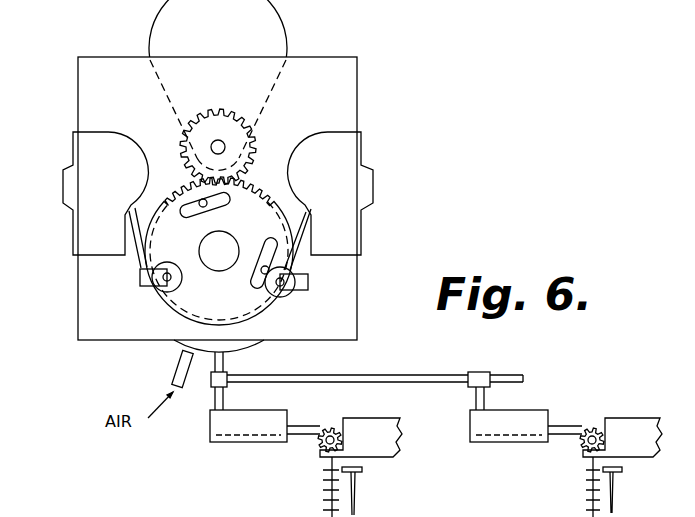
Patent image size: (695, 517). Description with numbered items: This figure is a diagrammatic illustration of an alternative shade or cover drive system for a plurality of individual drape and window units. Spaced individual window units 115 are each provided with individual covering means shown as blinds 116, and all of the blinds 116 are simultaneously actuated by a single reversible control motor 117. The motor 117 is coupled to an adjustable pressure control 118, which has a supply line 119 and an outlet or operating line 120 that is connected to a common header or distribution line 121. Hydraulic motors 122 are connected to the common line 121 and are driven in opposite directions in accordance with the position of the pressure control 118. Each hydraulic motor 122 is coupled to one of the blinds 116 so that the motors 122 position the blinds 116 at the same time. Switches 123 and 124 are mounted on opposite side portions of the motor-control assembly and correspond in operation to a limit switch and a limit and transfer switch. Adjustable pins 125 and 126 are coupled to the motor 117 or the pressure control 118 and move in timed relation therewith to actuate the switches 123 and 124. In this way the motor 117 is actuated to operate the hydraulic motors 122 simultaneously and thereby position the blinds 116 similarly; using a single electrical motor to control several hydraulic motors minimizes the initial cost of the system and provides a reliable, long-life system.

The window unit 115 is at (357, 498).
The blind 116 is at (327, 488).
The reversible control motor 117 is at (278, 33).
The adjustable pressure control 118 is at (177, 343).
The supply line 119 is at (172, 374).
The operating line 120 is at (224, 364).
The common header line 121 is at (388, 376).
The hydraulic motor 122 is at (243, 437).
The switch 123 is at (77, 241).
The switch 124 is at (361, 166).
The adjustable pin 125 is at (210, 207).
The adjustable pin 126 is at (258, 272).